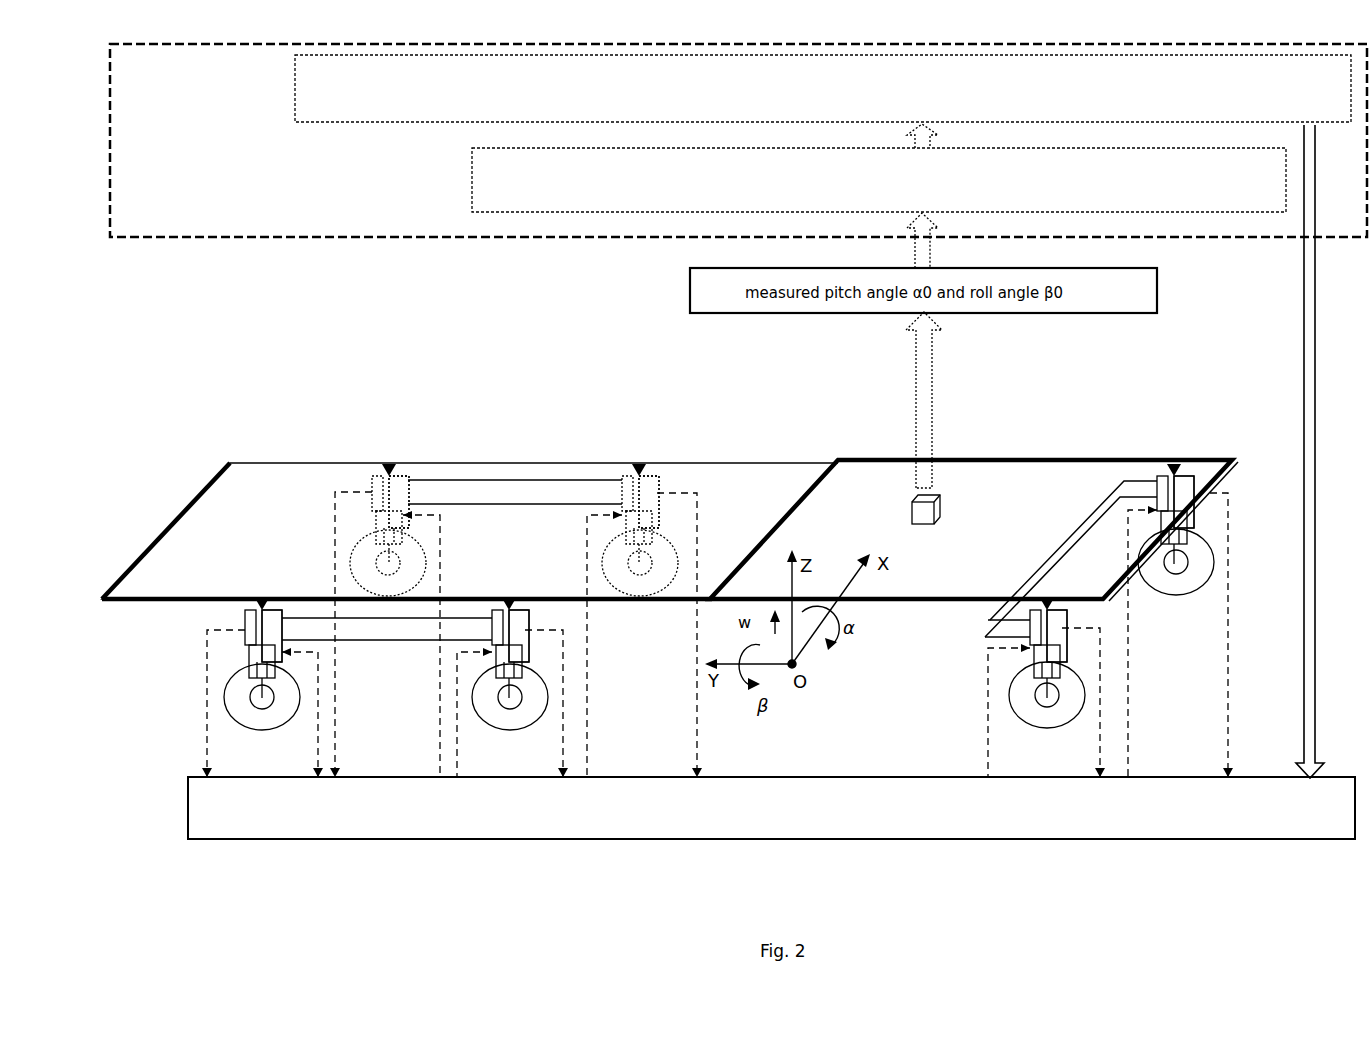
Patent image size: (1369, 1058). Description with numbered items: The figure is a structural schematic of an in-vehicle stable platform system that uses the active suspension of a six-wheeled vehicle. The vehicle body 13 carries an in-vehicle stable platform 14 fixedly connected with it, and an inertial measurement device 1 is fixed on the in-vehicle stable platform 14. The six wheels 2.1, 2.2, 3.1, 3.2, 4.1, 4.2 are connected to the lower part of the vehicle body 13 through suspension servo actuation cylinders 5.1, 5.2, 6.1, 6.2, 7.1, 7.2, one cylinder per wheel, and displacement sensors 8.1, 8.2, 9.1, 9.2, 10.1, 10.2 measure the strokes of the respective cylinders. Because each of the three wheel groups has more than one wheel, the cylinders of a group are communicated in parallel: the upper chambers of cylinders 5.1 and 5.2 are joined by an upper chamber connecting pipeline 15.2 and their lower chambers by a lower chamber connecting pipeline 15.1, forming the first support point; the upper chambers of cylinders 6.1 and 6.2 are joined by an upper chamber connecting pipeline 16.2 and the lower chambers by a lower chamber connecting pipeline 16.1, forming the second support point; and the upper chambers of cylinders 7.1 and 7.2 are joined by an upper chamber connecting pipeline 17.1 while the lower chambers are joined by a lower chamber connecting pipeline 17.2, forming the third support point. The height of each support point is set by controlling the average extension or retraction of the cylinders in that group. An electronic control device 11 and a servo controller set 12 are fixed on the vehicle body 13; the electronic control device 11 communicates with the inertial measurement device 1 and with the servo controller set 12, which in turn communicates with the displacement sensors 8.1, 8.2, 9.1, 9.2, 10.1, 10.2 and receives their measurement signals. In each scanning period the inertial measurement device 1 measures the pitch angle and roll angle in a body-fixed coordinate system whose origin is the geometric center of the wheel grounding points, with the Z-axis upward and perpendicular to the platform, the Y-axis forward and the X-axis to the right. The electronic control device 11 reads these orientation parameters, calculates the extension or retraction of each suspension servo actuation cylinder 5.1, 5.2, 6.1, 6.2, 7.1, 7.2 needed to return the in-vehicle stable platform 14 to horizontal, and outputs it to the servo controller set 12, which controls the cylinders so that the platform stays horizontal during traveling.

The inertial measurement device 1 is at (915, 512).
The wheel 2.1 is at (630, 598).
The wheel 2.2 is at (356, 546).
The wheel 3.1 is at (248, 728).
The wheel 3.2 is at (515, 727).
The wheel 4.1 is at (1040, 728).
The wheel 4.2 is at (1166, 604).
The suspension servo actuation cylinder 5.1 is at (632, 472).
The suspension servo actuation cylinder 5.2 is at (401, 472).
The suspension servo actuation cylinder 6.1 is at (276, 612).
The suspension servo actuation cylinder 6.2 is at (500, 612).
The suspension servo actuation cylinder 7.1 is at (1036, 616).
The suspension servo actuation cylinder 7.2 is at (1166, 474).
The displacement sensor 8.1 is at (650, 472).
The displacement sensor 8.2 is at (384, 472).
The displacement sensor 9.1 is at (252, 612).
The displacement sensor 9.2 is at (524, 612).
The displacement sensor 10.1 is at (1075, 612).
The displacement sensor 10.2 is at (1192, 488).
The electronic control device 11 is at (550, 246).
The servo controller set 12 is at (842, 776).
The vehicle body 13 is at (260, 480).
The in-vehicle stable platform 14 is at (882, 482).
The lower chamber connecting pipeline 15.1 is at (494, 508).
The upper chamber connecting pipeline 15.2 is at (552, 484).
The lower chamber connecting pipeline 16.1 is at (432, 622).
The upper chamber connecting pipeline 16.2 is at (440, 640).
The upper chamber connecting pipeline 17.1 is at (1038, 572).
The lower chamber connecting pipeline 17.2 is at (1097, 542).